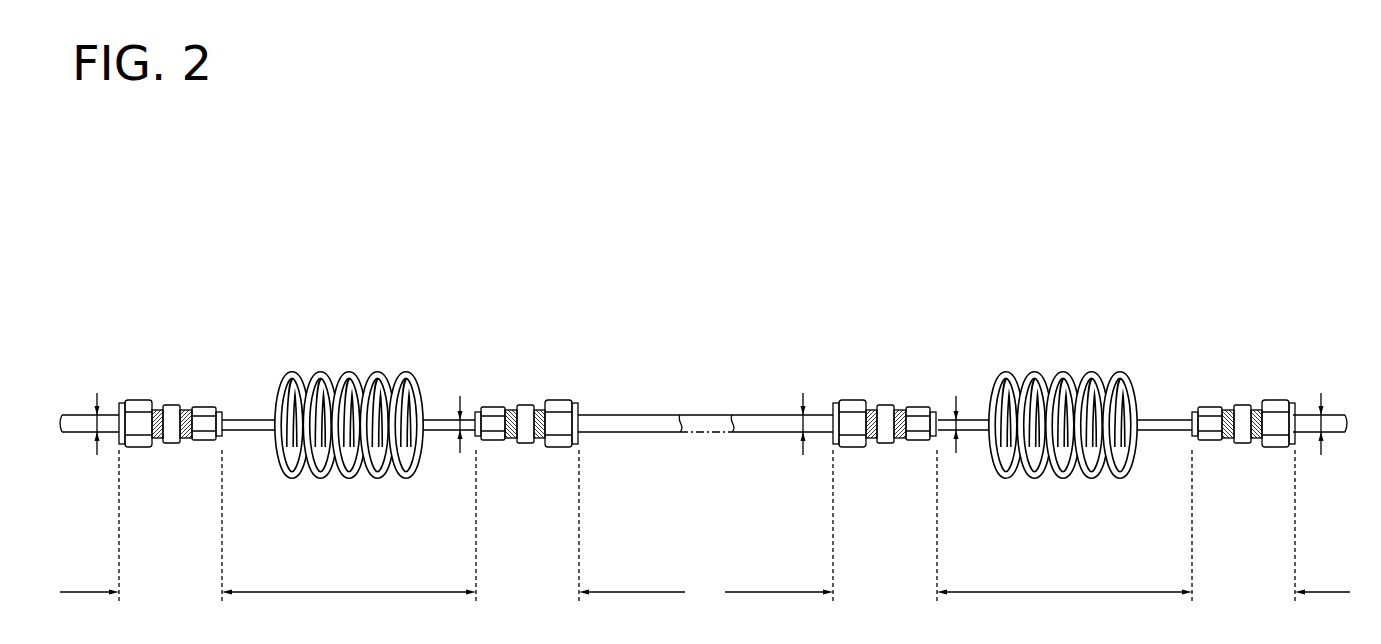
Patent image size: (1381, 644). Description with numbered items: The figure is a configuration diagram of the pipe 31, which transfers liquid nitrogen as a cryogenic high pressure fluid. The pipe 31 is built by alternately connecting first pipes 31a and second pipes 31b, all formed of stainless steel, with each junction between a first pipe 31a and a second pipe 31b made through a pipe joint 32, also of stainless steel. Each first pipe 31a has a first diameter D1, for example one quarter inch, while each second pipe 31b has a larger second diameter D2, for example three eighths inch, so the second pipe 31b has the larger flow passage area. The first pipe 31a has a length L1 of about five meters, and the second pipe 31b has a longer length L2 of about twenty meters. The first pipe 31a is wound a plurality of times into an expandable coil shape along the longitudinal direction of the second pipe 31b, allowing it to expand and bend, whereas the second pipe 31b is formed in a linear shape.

The pipe 31 is at (670, 360).
The first pipe 31a is at (348, 371).
The second pipe 31b is at (633, 413).
The pipe joint 32 is at (170, 389).
The first diameter D1 is at (461, 420).
The second diameter D2 is at (97, 421).
The length of first pipe L1 is at (707, 526).
The length of second pipe L2 is at (705, 526).